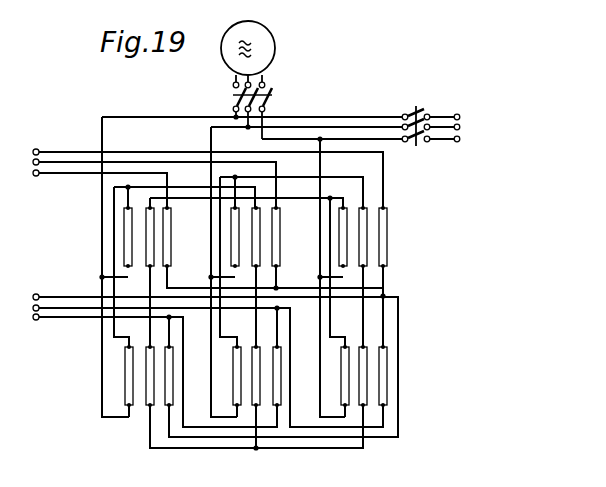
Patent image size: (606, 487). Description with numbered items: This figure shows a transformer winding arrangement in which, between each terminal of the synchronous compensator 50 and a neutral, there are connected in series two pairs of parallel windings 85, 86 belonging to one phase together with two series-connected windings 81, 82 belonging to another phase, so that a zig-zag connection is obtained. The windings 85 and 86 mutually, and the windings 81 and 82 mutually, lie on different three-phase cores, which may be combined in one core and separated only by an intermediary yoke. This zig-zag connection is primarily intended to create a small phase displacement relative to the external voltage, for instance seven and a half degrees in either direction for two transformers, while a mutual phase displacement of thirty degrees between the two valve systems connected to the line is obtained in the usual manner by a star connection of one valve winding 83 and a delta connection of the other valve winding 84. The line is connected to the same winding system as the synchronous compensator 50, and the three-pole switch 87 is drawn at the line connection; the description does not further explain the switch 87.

The synchronous compensator 50 is at (270, 50).
The three-pole switch 87 is at (462, 106).
The series-connected winding 81 is at (148, 247).
The series-connected winding 82 is at (150, 381).
The valve winding 83 is at (169, 219).
The valve winding 84 is at (170, 357).
The parallel winding 85 is at (130, 240).
The parallel winding 86 is at (130, 372).